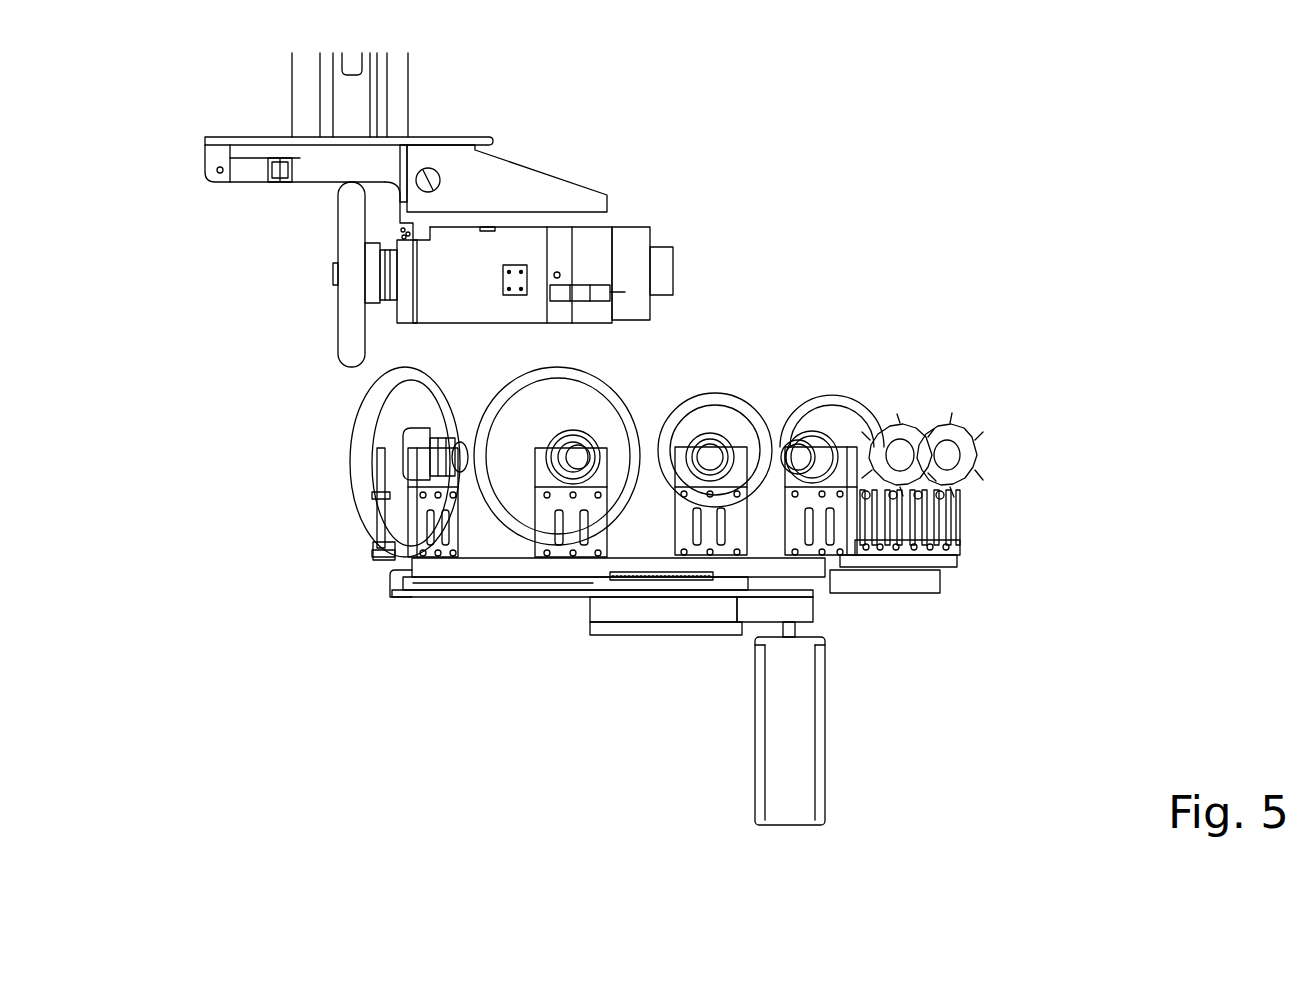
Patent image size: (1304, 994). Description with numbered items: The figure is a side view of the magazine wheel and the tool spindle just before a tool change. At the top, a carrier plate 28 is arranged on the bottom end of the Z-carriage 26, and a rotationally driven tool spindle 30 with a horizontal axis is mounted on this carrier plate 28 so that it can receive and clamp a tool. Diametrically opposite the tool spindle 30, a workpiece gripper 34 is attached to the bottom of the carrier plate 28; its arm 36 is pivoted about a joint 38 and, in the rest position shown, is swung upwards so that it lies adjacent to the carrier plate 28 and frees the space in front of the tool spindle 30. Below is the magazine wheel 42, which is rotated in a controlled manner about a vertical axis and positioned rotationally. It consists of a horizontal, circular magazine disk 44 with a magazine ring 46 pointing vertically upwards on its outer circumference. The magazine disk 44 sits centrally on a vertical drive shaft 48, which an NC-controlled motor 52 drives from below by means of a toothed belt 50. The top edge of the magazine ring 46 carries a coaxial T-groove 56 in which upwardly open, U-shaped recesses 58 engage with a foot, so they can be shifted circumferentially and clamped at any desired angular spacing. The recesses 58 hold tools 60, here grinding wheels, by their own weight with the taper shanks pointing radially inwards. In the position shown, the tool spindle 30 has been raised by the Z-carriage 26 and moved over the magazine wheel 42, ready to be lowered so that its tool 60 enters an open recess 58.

The Z-carriage 26 is at (302, 115).
The carrier plate 28 is at (467, 140).
The tool spindle 30 is at (515, 242).
The workpiece gripper 34 is at (192, 187).
The arm 36 is at (260, 172).
The joint 38 is at (207, 193).
The magazine wheel 42 is at (478, 565).
The magazine disk 44 is at (547, 598).
The magazine ring 46 is at (458, 612).
The drive shaft 48 is at (655, 568).
The toothed belt 50 is at (695, 610).
The NC-controlled motor 52 is at (778, 748).
The T-groove 56 is at (366, 583).
The recesses 58 is at (381, 475).
The tools 60 is at (352, 277).